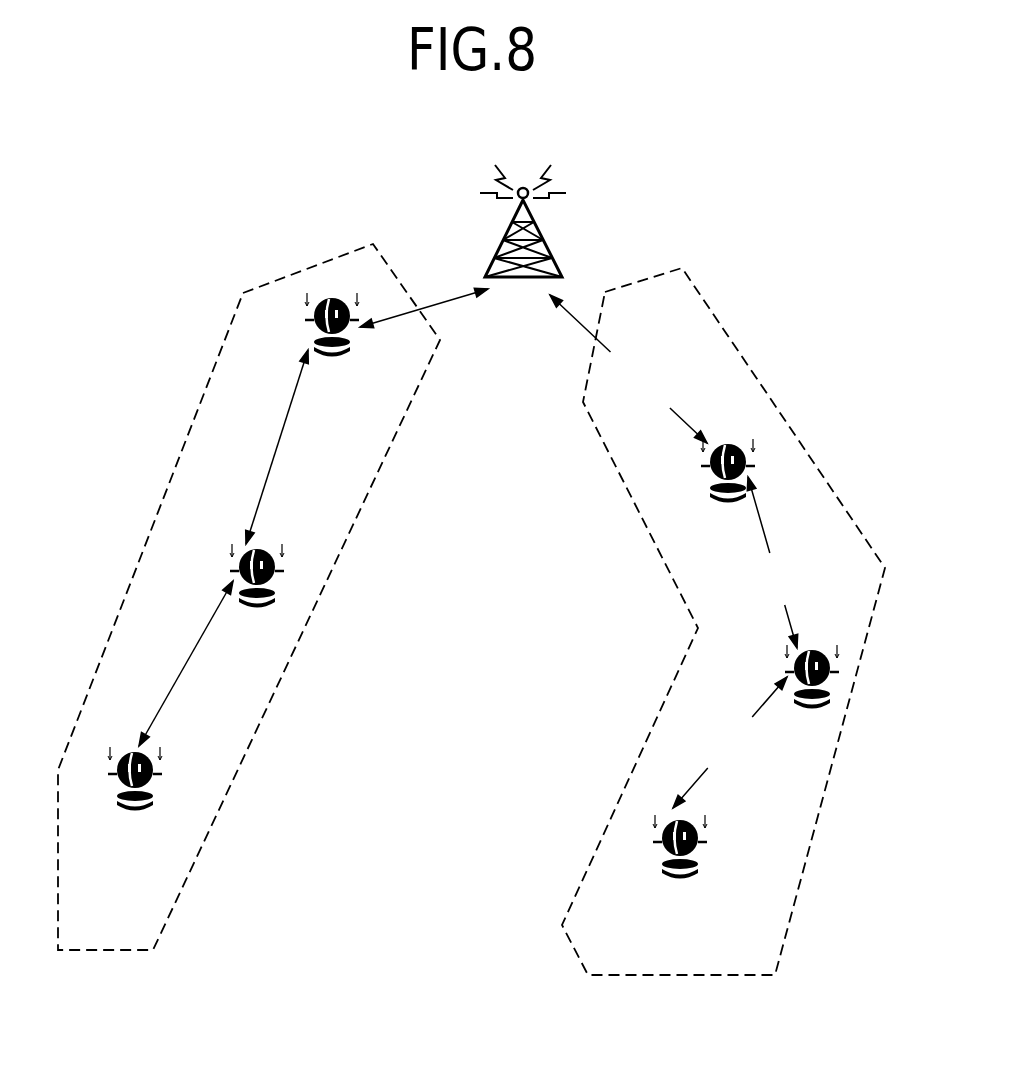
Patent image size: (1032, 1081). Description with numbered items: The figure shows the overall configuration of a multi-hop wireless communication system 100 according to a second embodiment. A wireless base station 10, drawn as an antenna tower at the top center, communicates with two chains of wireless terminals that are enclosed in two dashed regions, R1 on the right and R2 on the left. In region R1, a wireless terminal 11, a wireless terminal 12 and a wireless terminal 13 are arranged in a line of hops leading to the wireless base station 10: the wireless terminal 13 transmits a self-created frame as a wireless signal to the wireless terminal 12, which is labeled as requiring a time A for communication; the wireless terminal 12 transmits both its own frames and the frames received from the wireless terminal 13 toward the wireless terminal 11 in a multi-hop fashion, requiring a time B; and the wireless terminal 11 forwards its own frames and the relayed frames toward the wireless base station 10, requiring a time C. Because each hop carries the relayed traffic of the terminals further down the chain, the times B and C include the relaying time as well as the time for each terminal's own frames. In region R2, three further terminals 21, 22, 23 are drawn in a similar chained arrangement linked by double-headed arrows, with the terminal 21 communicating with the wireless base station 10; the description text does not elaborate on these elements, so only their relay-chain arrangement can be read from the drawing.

The multi-hop wireless communication system 100 is at (132, 272).
The wireless base station 10 is at (548, 236).
The wireless terminal 11 is at (730, 500).
The wireless terminal 12 is at (814, 706).
The wireless terminal 13 is at (682, 876).
The mobile robot 21 is at (334, 354).
The mobile robot 22 is at (259, 605).
The mobile robot 23 is at (137, 808).
The first region R1 is at (615, 498).
The second region R2 is at (333, 596).